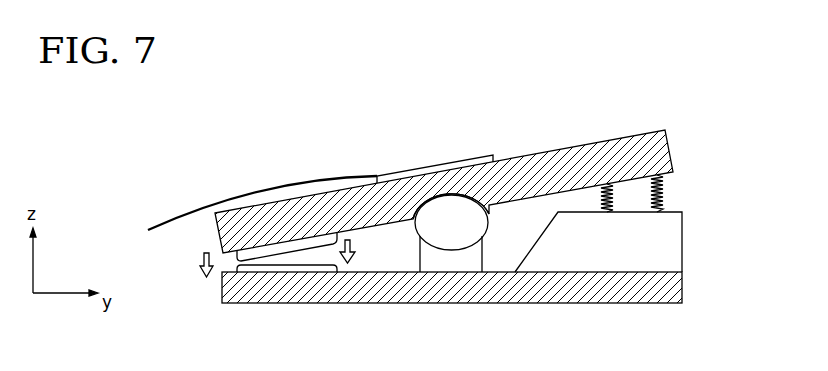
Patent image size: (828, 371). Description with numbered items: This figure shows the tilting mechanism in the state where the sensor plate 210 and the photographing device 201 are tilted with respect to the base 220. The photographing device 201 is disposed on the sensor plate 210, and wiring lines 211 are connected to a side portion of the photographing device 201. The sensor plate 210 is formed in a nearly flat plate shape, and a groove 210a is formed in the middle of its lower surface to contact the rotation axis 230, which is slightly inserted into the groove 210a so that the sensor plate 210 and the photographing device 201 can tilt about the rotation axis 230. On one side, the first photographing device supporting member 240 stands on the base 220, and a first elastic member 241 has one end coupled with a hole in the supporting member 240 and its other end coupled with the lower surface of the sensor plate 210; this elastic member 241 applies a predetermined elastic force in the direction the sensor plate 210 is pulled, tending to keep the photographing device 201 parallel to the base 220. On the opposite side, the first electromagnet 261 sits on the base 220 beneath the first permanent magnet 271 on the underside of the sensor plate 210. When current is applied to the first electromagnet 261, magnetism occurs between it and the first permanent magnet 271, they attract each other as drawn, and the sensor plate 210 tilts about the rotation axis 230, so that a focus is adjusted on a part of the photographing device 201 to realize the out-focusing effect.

The photographing device 201 is at (425, 168).
The sensor plate 210 is at (559, 160).
The groove 210a is at (472, 197).
The wiring lines 211 is at (192, 212).
The base 220 is at (670, 283).
The rotation axis 230 is at (450, 233).
The first photographing device supporting member 240 is at (670, 240).
The first elastic member 241 is at (665, 193).
The first electromagnet 261 is at (300, 266).
The first permanent magnet 271 is at (253, 258).